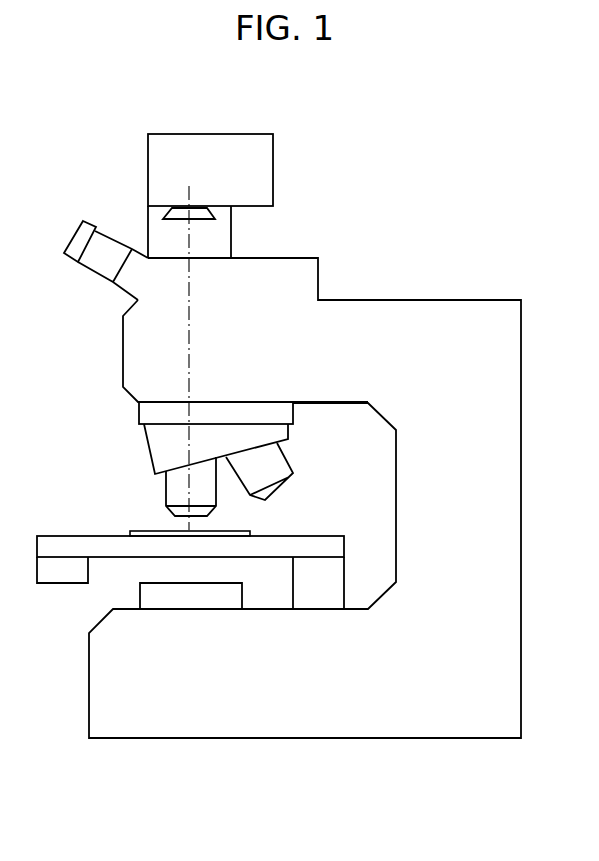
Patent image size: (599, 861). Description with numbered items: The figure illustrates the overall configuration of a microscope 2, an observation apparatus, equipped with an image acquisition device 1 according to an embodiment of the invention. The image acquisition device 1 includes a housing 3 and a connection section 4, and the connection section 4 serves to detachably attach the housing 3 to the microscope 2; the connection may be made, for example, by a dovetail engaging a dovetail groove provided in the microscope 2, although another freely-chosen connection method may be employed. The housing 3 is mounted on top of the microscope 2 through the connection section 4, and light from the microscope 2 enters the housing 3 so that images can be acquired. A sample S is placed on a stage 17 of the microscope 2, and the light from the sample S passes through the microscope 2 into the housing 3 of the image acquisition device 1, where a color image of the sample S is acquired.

The image acquisition device 1 is at (380, 140).
The microscope 2 is at (466, 265).
The housing 3 is at (273, 169).
The connection section 4 is at (228, 219).
The stage 17 is at (82, 536).
The sample S is at (240, 527).